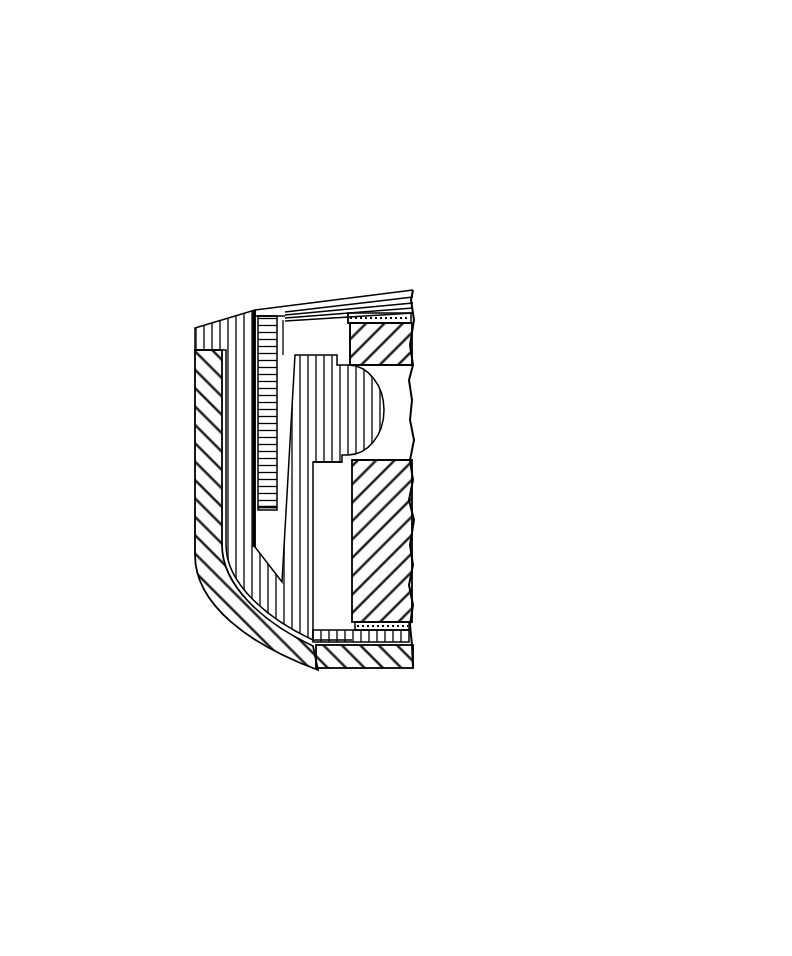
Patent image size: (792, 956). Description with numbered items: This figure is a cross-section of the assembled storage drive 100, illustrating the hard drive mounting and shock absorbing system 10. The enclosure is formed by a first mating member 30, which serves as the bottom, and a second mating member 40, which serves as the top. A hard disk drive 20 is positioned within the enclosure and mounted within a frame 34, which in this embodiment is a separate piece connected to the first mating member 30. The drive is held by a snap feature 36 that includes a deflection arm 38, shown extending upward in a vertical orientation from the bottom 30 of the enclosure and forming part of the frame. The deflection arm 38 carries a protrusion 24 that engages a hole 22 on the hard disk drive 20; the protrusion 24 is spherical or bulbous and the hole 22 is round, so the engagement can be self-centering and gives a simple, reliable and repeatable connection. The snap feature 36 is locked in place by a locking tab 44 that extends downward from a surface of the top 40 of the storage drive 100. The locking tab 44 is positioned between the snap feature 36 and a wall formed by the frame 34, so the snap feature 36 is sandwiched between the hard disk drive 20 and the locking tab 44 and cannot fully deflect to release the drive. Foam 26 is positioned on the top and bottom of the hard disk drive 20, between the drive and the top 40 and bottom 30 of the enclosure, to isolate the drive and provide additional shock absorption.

The storage drive 100 is at (635, 153).
The hard drive mounting and shock absorbing system 10 is at (195, 181).
The hard disk drive 20 is at (410, 552).
The hole 22 is at (412, 398).
The protrusion 24 is at (385, 420).
The foam 26 is at (410, 318).
The first mating member 30 is at (262, 632).
The frame 34 is at (222, 318).
The snap feature 36 is at (318, 340).
The deflection arm 38 is at (305, 553).
The second mating member 40 is at (393, 293).
The locking tab 44 is at (265, 468).